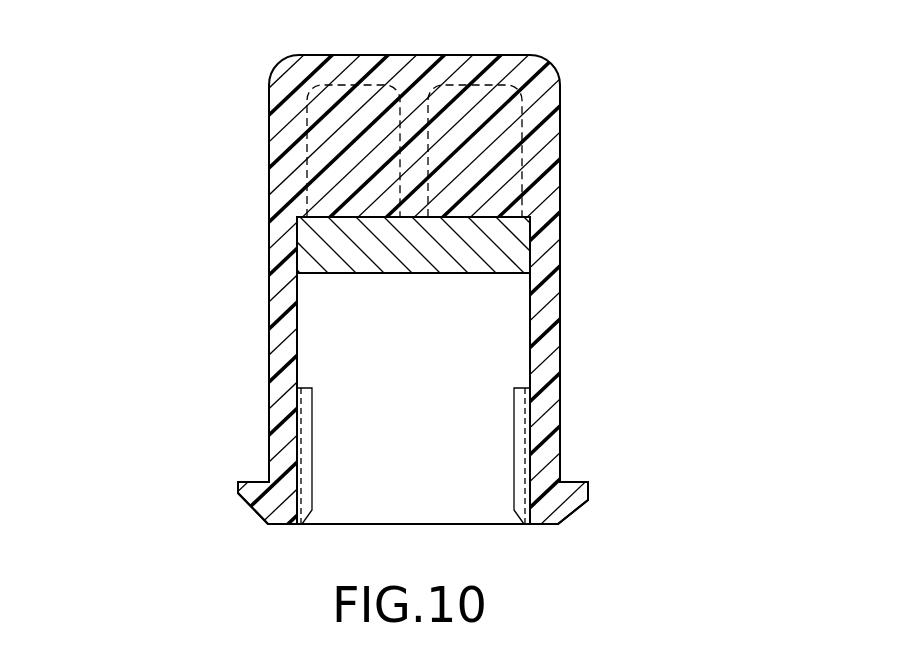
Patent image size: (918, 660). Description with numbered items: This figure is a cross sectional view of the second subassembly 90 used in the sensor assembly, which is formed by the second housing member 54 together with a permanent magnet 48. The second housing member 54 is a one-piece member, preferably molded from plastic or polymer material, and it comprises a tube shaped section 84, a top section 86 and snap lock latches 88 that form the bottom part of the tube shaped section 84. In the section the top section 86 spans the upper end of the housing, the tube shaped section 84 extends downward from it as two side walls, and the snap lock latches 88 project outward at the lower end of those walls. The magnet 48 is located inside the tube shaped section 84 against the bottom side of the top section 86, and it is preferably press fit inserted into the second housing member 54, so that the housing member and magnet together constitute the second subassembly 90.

The second subassembly 90 is at (168, 78).
The top section 86 is at (286, 62).
The second housing member 54 is at (552, 66).
The magnet 48 is at (513, 250).
The tube shaped section 84 is at (268, 317).
The snap lock latches 88 is at (237, 492).